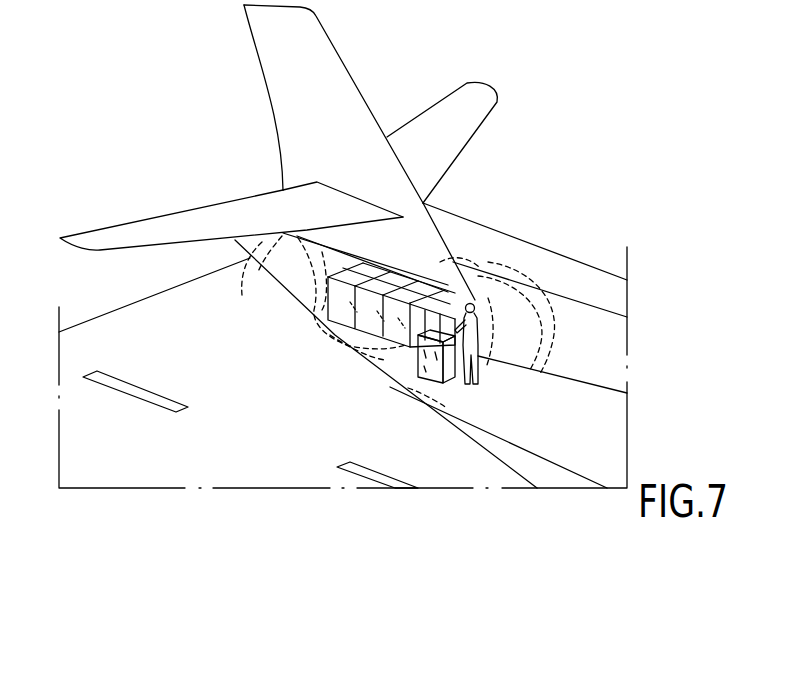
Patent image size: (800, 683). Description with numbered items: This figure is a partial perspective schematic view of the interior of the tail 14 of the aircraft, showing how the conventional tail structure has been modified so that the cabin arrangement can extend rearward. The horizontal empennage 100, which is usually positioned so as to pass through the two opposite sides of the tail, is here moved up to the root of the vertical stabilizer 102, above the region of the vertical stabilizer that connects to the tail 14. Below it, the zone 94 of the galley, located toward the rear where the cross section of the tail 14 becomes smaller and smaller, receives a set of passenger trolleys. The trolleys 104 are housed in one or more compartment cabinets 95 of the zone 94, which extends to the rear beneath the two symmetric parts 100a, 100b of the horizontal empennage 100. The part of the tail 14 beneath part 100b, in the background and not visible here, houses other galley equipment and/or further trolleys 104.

The horizontal empennage 100 is at (474, 143).
The first symmetric part of the horizontal empennage 100a is at (143, 232).
The second symmetric part of the horizontal empennage 100b is at (480, 112).
The vertical stabilizer 102 is at (440, 218).
The tail 14 is at (508, 260).
The zone receiving a set of passenger trolleys 94 is at (302, 317).
The compartment cabinets 95 is at (366, 323).
The trolleys 104 is at (410, 361).